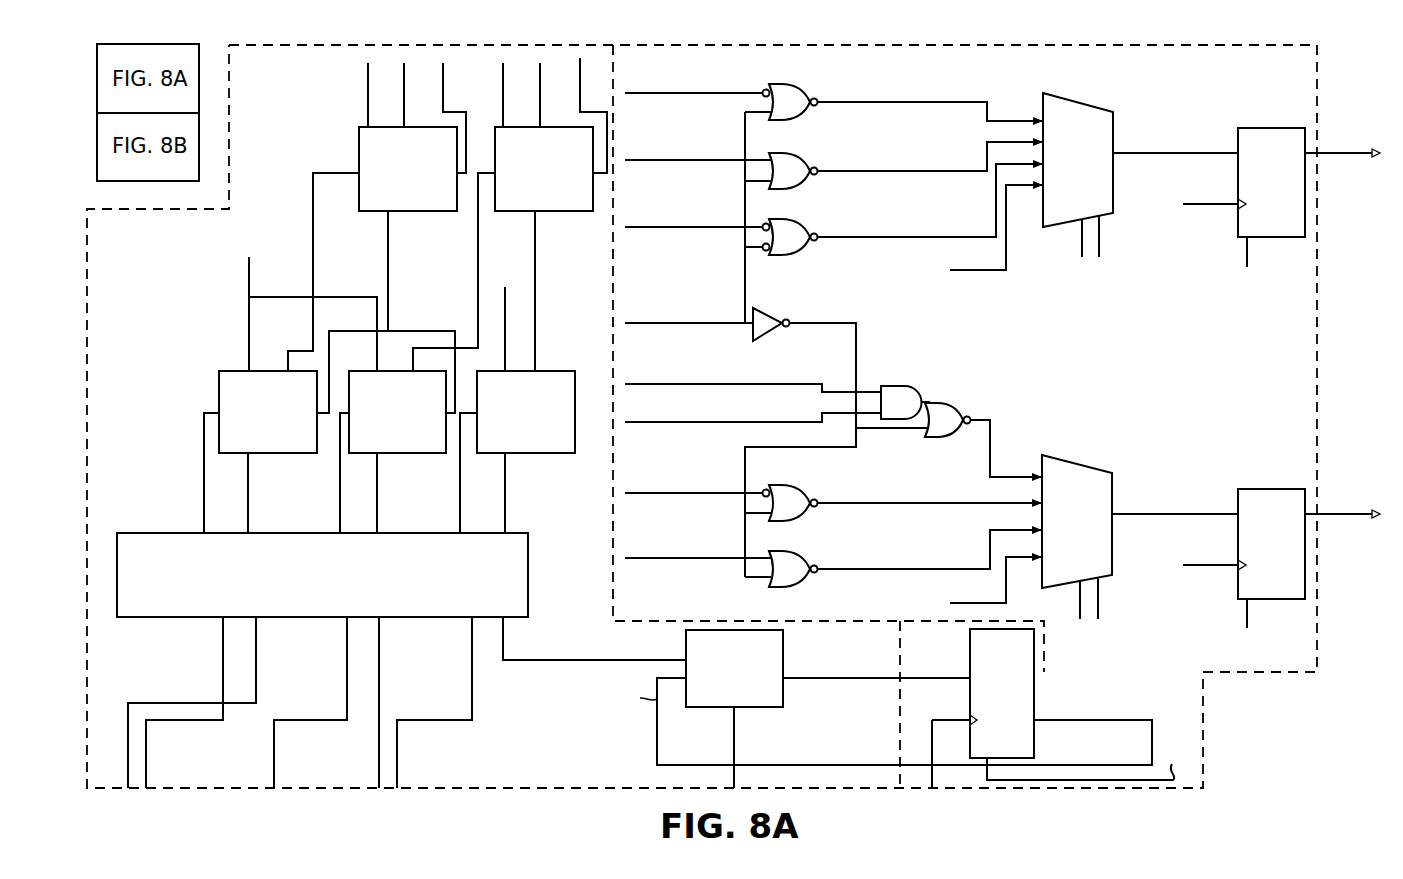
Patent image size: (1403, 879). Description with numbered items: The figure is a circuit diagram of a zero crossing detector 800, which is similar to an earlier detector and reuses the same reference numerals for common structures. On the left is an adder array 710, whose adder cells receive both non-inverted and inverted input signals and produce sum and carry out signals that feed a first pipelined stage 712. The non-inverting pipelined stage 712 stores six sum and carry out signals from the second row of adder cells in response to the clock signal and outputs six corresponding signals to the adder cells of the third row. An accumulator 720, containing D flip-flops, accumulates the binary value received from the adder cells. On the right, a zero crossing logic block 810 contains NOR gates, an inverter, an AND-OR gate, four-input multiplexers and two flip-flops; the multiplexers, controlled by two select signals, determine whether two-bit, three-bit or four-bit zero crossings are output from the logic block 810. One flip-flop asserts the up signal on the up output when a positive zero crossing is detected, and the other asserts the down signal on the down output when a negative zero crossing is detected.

The zero crossing detector 800 is at (1192, 31).
The adder array 710 is at (417, 45).
The first pipelined stage 712 is at (322, 575).
The zero crossing logic block 810 is at (1073, 45).
The accumulator 720 is at (1203, 731).